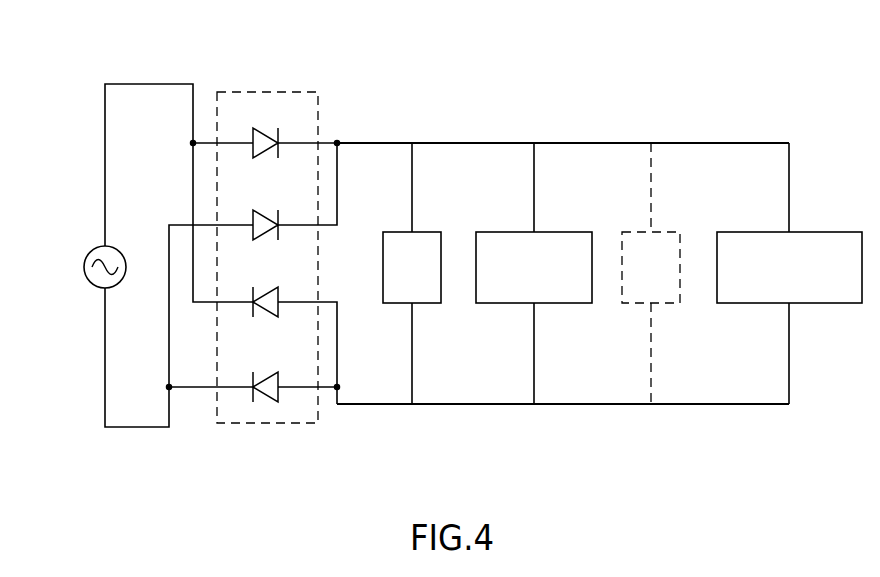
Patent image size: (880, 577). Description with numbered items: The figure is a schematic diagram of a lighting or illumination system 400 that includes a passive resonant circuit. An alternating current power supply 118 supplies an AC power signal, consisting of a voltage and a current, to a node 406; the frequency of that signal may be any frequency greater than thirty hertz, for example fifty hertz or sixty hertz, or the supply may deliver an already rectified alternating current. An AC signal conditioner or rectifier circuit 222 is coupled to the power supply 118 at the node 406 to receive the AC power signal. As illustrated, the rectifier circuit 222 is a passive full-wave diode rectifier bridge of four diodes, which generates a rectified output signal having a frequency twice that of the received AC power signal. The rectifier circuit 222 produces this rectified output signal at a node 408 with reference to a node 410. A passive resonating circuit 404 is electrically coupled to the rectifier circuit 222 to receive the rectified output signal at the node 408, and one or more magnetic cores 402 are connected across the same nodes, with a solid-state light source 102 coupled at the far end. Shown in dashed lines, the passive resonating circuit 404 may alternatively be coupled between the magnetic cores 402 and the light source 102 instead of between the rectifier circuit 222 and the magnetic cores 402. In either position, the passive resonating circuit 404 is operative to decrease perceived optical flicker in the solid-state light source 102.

The illumination system 400 is at (668, 62).
The alternating current power supply 118 is at (97, 284).
The node 406 is at (146, 83).
The AC signal conditioner or rectifier circuit 222 is at (258, 91).
The node 408 is at (372, 142).
The node 410 is at (368, 406).
The passive resonating circuit 404 is at (427, 231).
The magnetic cores 402 is at (553, 231).
The solid-state light source 102 is at (827, 231).